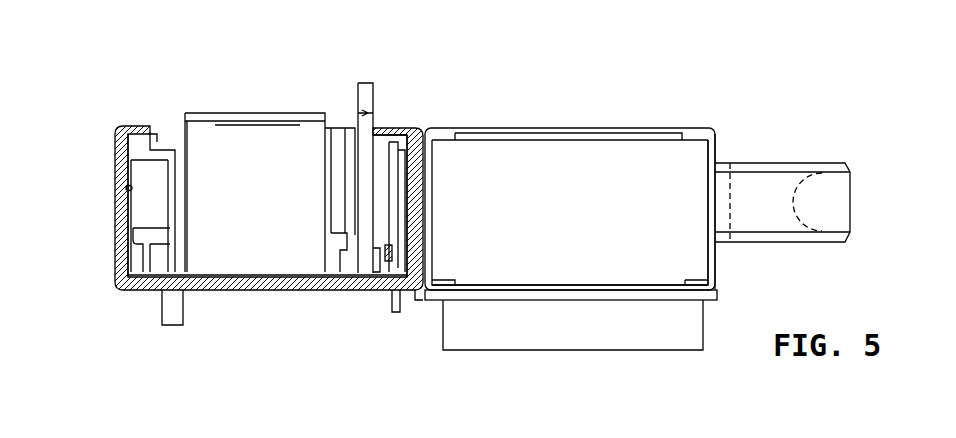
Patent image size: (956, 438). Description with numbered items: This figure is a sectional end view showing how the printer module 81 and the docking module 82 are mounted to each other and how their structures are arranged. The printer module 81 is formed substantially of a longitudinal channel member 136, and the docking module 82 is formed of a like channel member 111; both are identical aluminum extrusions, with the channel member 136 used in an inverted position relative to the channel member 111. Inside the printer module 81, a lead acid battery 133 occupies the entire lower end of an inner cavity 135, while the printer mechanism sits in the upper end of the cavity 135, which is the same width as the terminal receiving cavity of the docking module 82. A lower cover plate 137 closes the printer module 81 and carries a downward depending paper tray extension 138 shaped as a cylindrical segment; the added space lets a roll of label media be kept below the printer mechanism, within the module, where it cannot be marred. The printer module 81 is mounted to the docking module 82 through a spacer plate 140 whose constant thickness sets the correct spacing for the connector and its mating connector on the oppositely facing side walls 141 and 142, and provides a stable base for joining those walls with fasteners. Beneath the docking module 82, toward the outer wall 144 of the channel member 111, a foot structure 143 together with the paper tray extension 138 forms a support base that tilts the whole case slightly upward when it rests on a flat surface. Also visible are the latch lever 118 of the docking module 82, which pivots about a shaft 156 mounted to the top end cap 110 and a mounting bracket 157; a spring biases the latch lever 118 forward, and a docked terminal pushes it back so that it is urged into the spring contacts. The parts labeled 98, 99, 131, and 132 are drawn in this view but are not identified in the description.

The printer module 81 is at (692, 100).
The docking module 82 is at (240, 86).
The terminal pin 98 is at (833, 193).
The mounting plate 99 is at (715, 145).
The top end cap 110 is at (165, 148).
The channel member 111 is at (115, 153).
The latch lever 118 is at (373, 98).
The liner 131 is at (126, 187).
The contact block 132 is at (270, 142).
The lead acid battery 133 is at (520, 147).
The inner cavity 135 is at (582, 165).
The channel member 136 is at (707, 150).
The lower cover plate 137 is at (598, 287).
The paper tray extension 138 is at (645, 350).
The spacer plate 140 is at (418, 128).
The side wall 141 is at (433, 235).
The side wall 142 is at (418, 287).
The foot structure 143 is at (177, 313).
The outer wall 144 is at (120, 268).
The shaft 156 is at (372, 238).
The mounting bracket 157 is at (389, 293).